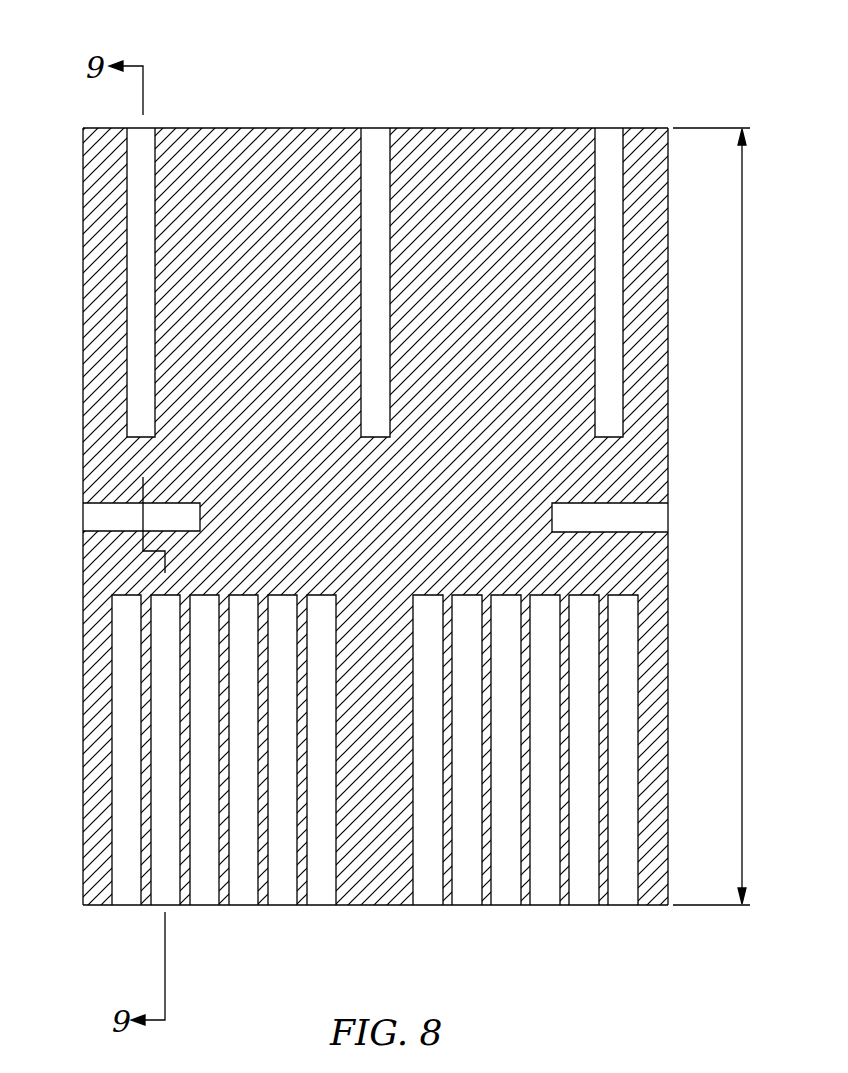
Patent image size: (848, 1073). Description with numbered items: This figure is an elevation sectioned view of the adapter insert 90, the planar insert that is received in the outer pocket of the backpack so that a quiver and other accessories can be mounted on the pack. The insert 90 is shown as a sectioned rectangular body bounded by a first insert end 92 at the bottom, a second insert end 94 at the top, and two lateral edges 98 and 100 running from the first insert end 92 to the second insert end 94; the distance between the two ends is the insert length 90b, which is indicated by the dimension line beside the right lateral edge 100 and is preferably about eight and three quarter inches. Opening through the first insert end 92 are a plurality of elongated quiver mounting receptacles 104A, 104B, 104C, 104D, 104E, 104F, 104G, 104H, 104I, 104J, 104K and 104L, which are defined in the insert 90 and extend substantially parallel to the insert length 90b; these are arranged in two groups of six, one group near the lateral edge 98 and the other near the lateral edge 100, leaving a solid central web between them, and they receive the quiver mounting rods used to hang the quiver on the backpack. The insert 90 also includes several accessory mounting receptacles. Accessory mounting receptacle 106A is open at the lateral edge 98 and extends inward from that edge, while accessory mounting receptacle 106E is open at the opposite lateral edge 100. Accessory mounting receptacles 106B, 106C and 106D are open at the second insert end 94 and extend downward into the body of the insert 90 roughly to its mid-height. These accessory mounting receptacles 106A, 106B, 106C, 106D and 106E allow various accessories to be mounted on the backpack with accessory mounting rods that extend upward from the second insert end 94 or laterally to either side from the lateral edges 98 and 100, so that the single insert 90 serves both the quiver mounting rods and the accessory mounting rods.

The adapter insert 90 is at (578, 81).
The insert length 90b is at (742, 355).
The first insert end 92 is at (650, 907).
The second insert end 94 is at (540, 128).
The lateral edge 98 is at (85, 660).
The lateral edge 100 is at (668, 648).
The quiver mounting receptacle 104A is at (118, 890).
The quiver mounting receptacle 104B is at (155, 890).
The quiver mounting receptacle 104C is at (190, 868).
The quiver mounting receptacle 104D is at (230, 865).
The quiver mounting receptacle 104E is at (268, 866).
The quiver mounting receptacle 104F is at (312, 866).
The quiver mounting receptacle 104G is at (440, 866).
The quiver mounting receptacle 104H is at (487, 866).
The quiver mounting receptacle 104I is at (520, 862).
The quiver mounting receptacle 104J is at (562, 868).
The quiver mounting receptacle 104K is at (600, 886).
The quiver mounting receptacle 104L is at (636, 887).
The accessory mounting receptacle 106A is at (98, 507).
The accessory mounting receptacle 106B is at (155, 147).
The accessory mounting receptacle 106C is at (390, 147).
The accessory mounting receptacle 106D is at (623, 147).
The accessory mounting receptacle 106E is at (648, 505).